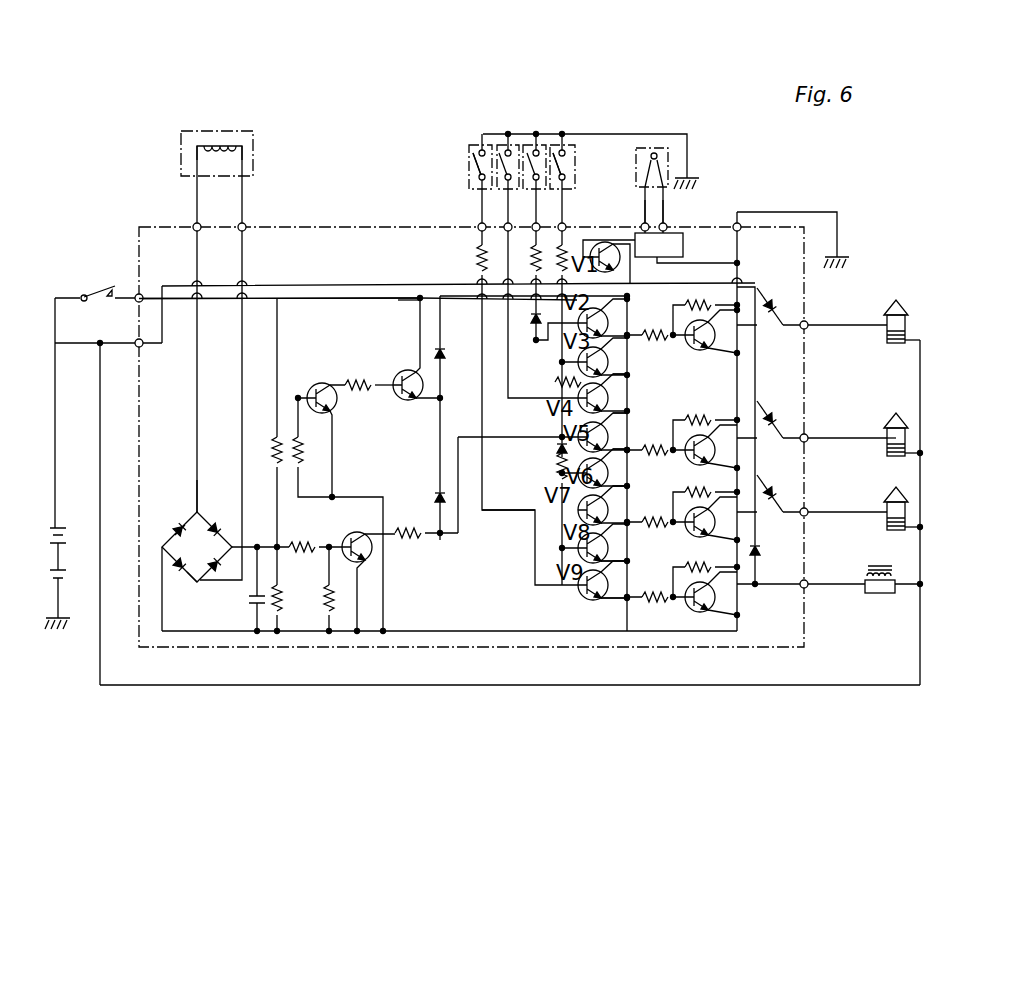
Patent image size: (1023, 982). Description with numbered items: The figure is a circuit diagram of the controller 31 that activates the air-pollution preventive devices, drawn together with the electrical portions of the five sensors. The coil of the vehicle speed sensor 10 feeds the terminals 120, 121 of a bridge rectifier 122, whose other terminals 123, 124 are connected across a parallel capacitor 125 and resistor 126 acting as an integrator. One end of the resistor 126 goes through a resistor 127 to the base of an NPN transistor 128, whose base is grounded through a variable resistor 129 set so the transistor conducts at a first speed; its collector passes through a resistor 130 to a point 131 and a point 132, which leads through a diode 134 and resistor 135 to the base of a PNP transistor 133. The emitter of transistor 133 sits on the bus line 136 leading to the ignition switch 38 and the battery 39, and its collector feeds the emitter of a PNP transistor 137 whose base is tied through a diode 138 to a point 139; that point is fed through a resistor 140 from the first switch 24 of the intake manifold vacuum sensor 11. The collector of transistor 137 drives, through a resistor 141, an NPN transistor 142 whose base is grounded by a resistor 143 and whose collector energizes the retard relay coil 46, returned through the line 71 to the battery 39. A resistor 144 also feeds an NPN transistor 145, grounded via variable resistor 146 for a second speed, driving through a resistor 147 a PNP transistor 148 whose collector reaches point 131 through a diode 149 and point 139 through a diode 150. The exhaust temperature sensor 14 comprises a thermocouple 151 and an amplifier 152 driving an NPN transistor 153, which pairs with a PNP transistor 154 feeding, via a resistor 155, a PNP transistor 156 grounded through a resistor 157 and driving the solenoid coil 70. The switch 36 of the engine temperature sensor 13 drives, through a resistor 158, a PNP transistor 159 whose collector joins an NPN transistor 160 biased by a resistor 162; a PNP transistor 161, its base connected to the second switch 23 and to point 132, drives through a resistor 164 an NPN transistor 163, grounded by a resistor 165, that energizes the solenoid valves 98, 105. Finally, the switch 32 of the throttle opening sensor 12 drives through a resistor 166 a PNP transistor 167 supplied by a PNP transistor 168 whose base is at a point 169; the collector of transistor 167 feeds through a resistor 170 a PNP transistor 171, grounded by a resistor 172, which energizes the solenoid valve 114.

The vehicle speed sensor 10 is at (203, 131).
The intake manifold vacuum sensor 11 is at (520, 148).
The throttle opening sensor 12 is at (470, 150).
The engine temperature sensor 13 is at (575, 148).
The exhaust temperature sensor 14 is at (652, 148).
The second switch 23 is at (507, 150).
The first switch 24 is at (538, 150).
The controller 31 is at (302, 225).
The switch 32 is at (478, 165).
The switch 36 is at (565, 158).
The ignition switch 38 is at (84, 293).
The battery 39 is at (50, 546).
The retard relay coil 46 is at (900, 578).
The solenoid coil 70 is at (907, 330).
The line 71 is at (522, 680).
The solenoid valve 98 is at (910, 425).
The solenoid valve 105 is at (928, 430).
The solenoid valve 114 is at (910, 503).
The terminal 120 is at (196, 512).
The terminal 121 is at (197, 583).
The bridge rectifier 122 is at (217, 500).
The terminal 123 is at (170, 545).
The terminal 124 is at (230, 575).
The capacitor 125 is at (249, 598).
The resistor 126 is at (276, 615).
The resistor 127 is at (304, 553).
The NPN transistor 128 is at (352, 565).
The variable resistor 129 is at (324, 600).
The resistor 130 is at (410, 540).
The point 131 is at (448, 538).
The point 132 is at (550, 437).
The PNP transistor 133 is at (612, 548).
The diode 134 is at (556, 448).
The resistor 135 is at (556, 468).
The bus line 136 is at (333, 299).
The PNP transistor 137 is at (588, 598).
The diode 138 is at (530, 321).
The point 139 is at (460, 300).
The resistor 140 is at (566, 245).
The resistor 141 is at (645, 600).
The NPN transistor 142 is at (688, 606).
The resistor 143 is at (688, 566).
The resistor 144 is at (272, 440).
The NPN transistor 145 is at (316, 384).
The variable resistor 146 is at (305, 455).
The resistor 147 is at (360, 380).
The PNP transistor 148 is at (405, 370).
The diode 149 is at (435, 495).
The diode 150 is at (445, 356).
The thermocouple 151 is at (657, 154).
The amplifier 152 is at (684, 246).
The NPN transistor 153 is at (664, 210).
The PNP transistor 154 is at (685, 304).
The resistor 155 is at (660, 340).
The PNP transistor 156 is at (745, 344).
The resistor 157 is at (735, 290).
The resistor 158 is at (545, 255).
The PNP transistor 159 is at (590, 384).
The NPN transistor 160 is at (615, 392).
The PNP transistor 161 is at (615, 412).
The resistor 162 is at (441, 392).
The NPN transistor 163 is at (740, 438).
The resistor 164 is at (672, 440).
The resistor 165 is at (740, 396).
The resistor 166 is at (480, 258).
The PNP transistor 167 is at (615, 490).
The PNP transistor 168 is at (615, 464).
The point 169 is at (548, 507).
The resistor 170 is at (668, 496).
The PNP transistor 171 is at (740, 515).
The resistor 172 is at (690, 492).